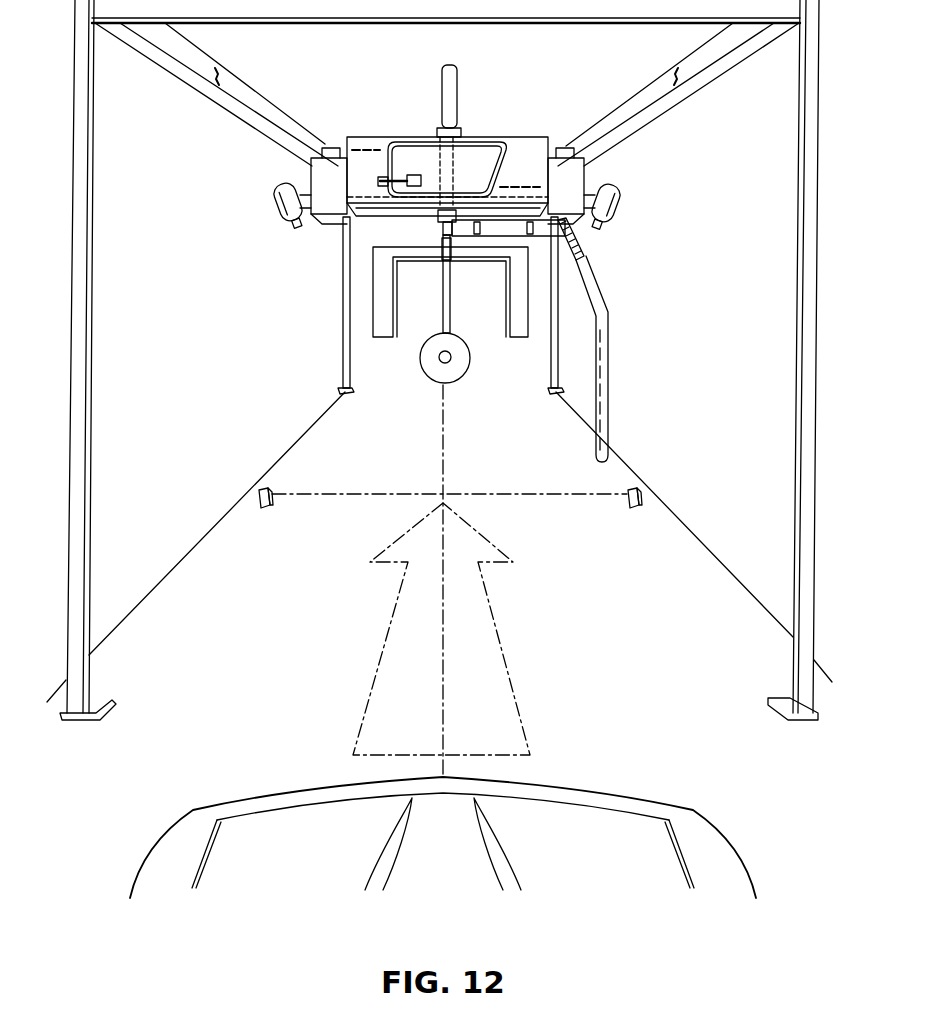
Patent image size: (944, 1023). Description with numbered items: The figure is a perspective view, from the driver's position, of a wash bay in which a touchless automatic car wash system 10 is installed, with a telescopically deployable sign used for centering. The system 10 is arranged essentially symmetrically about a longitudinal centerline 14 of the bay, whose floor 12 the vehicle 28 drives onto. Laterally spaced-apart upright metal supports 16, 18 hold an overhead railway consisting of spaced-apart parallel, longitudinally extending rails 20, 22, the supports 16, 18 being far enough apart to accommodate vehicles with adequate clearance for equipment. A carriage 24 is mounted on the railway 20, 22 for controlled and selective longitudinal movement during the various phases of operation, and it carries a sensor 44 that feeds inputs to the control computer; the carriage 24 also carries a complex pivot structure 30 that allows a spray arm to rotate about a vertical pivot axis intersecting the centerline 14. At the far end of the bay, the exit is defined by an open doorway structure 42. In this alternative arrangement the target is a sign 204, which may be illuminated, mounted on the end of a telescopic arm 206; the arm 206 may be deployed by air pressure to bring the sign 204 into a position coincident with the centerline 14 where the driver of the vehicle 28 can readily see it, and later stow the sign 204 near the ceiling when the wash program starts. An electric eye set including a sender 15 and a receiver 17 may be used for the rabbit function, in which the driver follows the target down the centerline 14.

The car wash system 10 is at (420, 108).
The floor 12 is at (383, 370).
The longitudinal centerline 14 is at (440, 479).
The sender 15 is at (258, 490).
The upright metal support 16 is at (340, 348).
The receiver 17 is at (640, 490).
The upright metal support 18 is at (556, 356).
The rail 20 is at (278, 117).
The rail 22 is at (622, 130).
The carriage 24 is at (500, 138).
The vehicle 28 is at (283, 790).
The pivot structure 30 is at (432, 215).
The doorway structure 42 is at (396, 312).
The sensor 44 is at (416, 174).
The sign 204 is at (456, 336).
The telescopic arm 206 is at (458, 100).